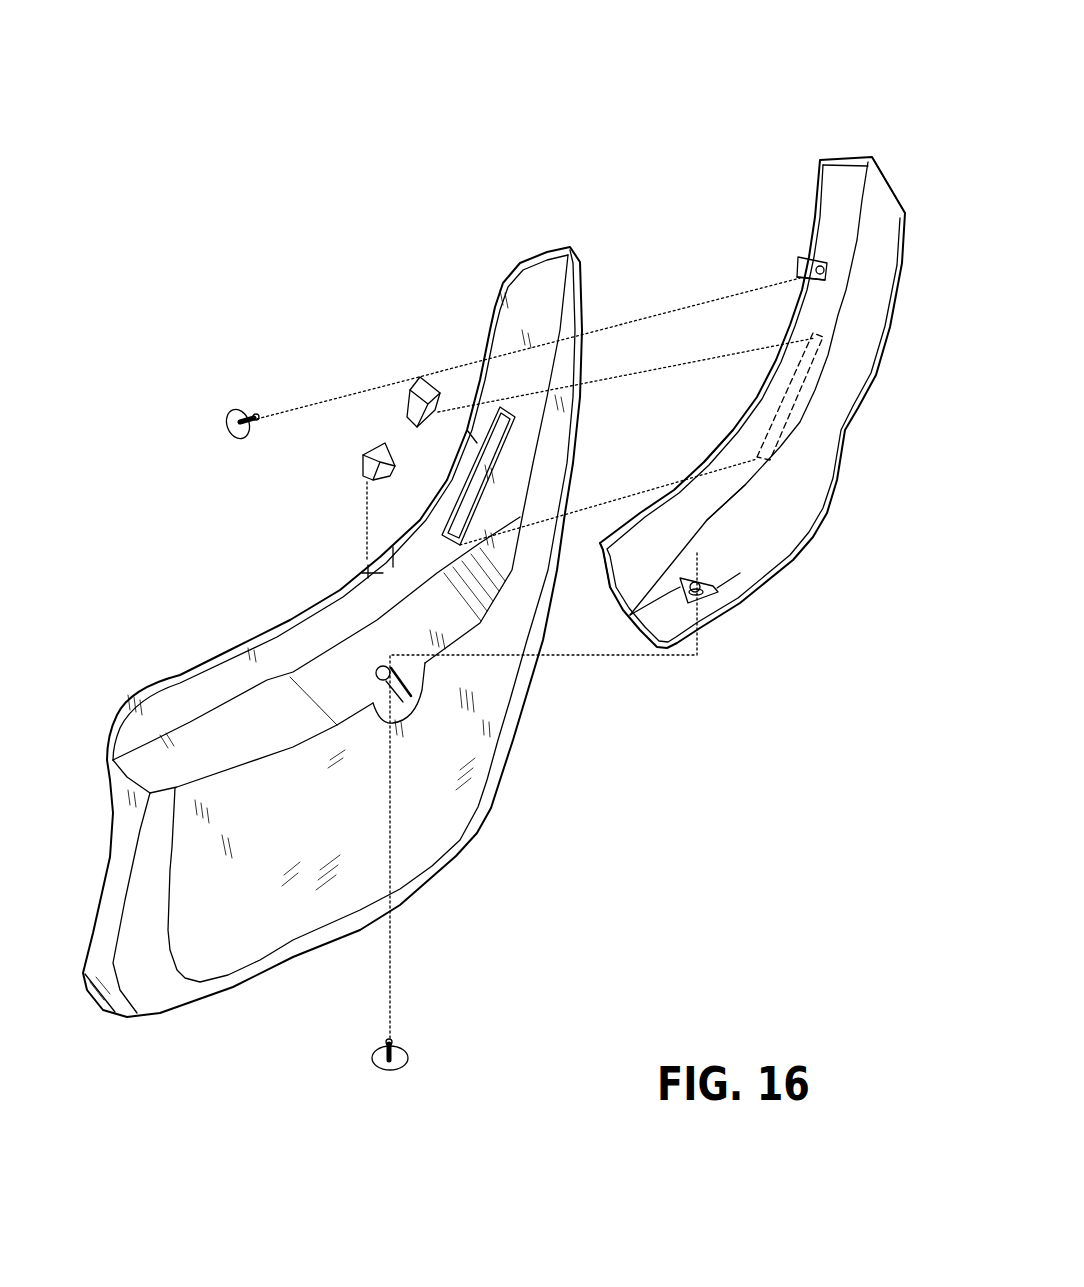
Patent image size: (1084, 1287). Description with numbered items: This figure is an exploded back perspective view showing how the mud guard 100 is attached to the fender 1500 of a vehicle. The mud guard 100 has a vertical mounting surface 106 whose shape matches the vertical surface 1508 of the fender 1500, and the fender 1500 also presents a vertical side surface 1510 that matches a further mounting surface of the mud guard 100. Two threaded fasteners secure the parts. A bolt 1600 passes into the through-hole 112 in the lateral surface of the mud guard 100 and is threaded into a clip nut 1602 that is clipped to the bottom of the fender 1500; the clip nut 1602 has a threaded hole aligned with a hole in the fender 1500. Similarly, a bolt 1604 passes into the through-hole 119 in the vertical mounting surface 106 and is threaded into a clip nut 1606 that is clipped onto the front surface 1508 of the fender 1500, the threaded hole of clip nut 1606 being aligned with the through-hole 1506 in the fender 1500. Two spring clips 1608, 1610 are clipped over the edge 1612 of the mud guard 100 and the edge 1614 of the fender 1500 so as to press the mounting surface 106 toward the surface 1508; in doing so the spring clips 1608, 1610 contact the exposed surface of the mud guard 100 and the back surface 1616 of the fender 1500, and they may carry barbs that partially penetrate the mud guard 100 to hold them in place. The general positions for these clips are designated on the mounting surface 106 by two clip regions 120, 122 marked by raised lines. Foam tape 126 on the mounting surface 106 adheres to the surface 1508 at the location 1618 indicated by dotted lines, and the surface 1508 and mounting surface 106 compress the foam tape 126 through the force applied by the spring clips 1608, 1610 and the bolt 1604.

The mud guard 100 is at (398, 660).
The vertical mounting surface 106 is at (523, 288).
The through-hole 112 is at (397, 673).
The through-hole 119 is at (507, 355).
The clip region 120 is at (366, 572).
The clip region 122 is at (480, 423).
The foam tape 126 is at (500, 430).
The fender 1500 is at (846, 152).
The through-hole 1506 is at (793, 264).
The vertical surface 1508 is at (603, 547).
The vertical side surface 1510 is at (890, 190).
The bolt 1600 is at (402, 1067).
The clip nut 1602 is at (720, 592).
The bolt 1604 is at (228, 416).
The clip nut 1606 is at (797, 278).
The spring clip 1608 is at (363, 472).
The spring clip 1610 is at (408, 408).
The edge 1612 is at (392, 562).
The edge 1614 is at (703, 470).
The back surface 1616 is at (693, 497).
The location 1618 is at (790, 393).